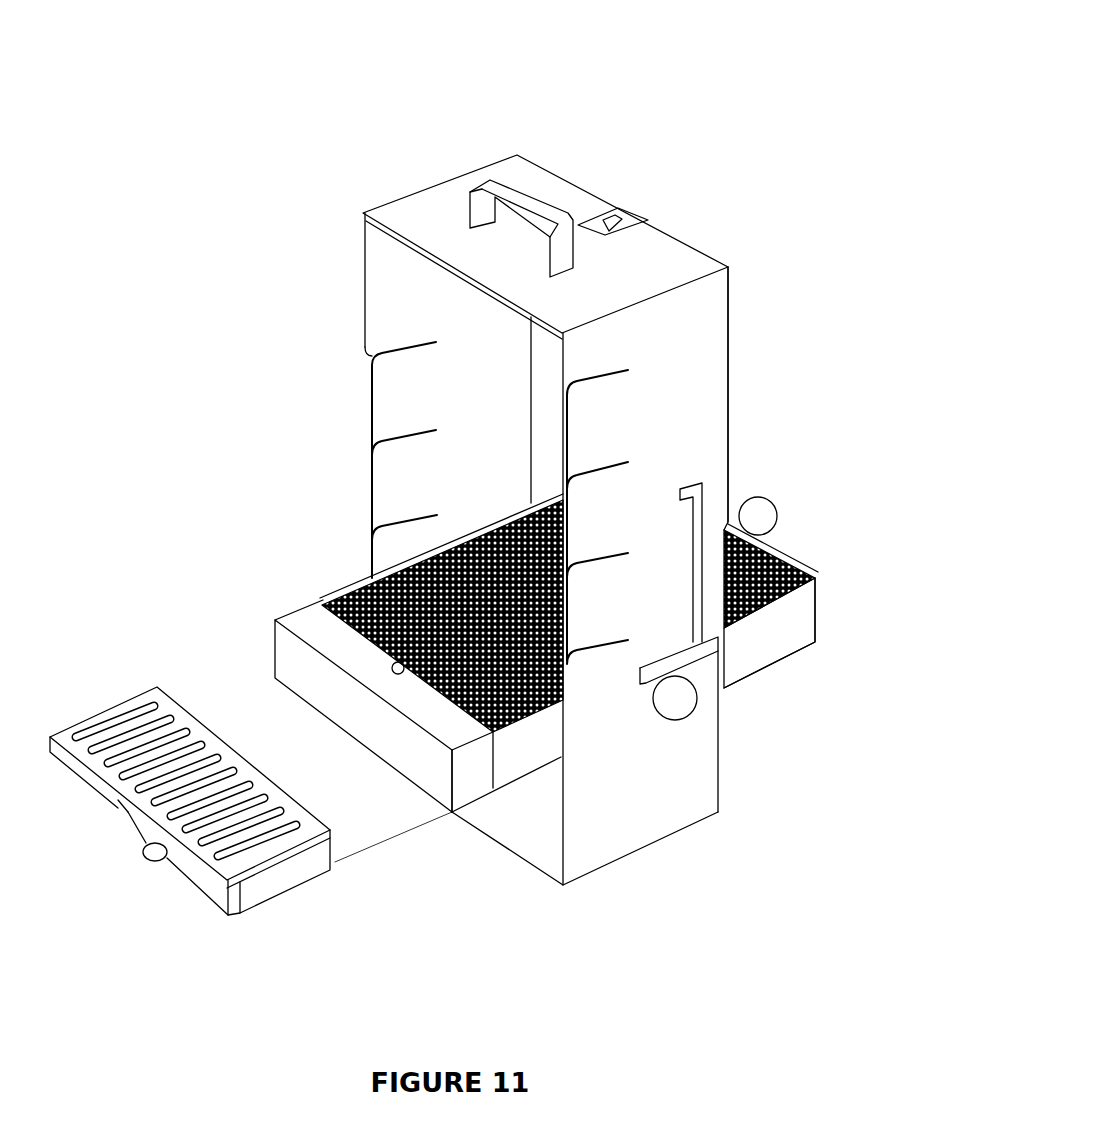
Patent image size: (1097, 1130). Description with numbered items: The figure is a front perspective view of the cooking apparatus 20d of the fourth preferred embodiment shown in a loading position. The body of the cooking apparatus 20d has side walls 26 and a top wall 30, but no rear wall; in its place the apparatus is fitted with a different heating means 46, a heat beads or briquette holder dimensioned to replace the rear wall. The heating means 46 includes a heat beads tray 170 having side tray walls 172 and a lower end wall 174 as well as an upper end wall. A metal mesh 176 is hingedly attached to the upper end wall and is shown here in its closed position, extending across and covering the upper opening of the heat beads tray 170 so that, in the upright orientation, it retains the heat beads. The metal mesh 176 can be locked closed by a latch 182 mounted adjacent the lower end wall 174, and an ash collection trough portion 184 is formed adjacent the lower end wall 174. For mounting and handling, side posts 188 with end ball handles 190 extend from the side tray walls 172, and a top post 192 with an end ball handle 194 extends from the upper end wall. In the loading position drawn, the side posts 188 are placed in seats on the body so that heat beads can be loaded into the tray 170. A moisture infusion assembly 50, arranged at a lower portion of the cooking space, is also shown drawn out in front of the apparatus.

The cooking apparatus 20d is at (698, 132).
The top wall 30 is at (532, 183).
The side walls 26 is at (385, 302).
The heating means 46 is at (874, 376).
The heat beads tray 170 is at (828, 563).
The side tray walls 172 is at (787, 637).
The lower end wall 174 is at (292, 657).
The metal mesh 176 is at (378, 590).
The latch 182 is at (392, 665).
The ash collection trough portion 184 is at (448, 730).
The side posts 188 is at (648, 682).
The end ball handles 190 is at (685, 705).
The top post 192 is at (735, 525).
The end ball handle 194 is at (765, 522).
The moisture infusion assembly 50 is at (157, 893).